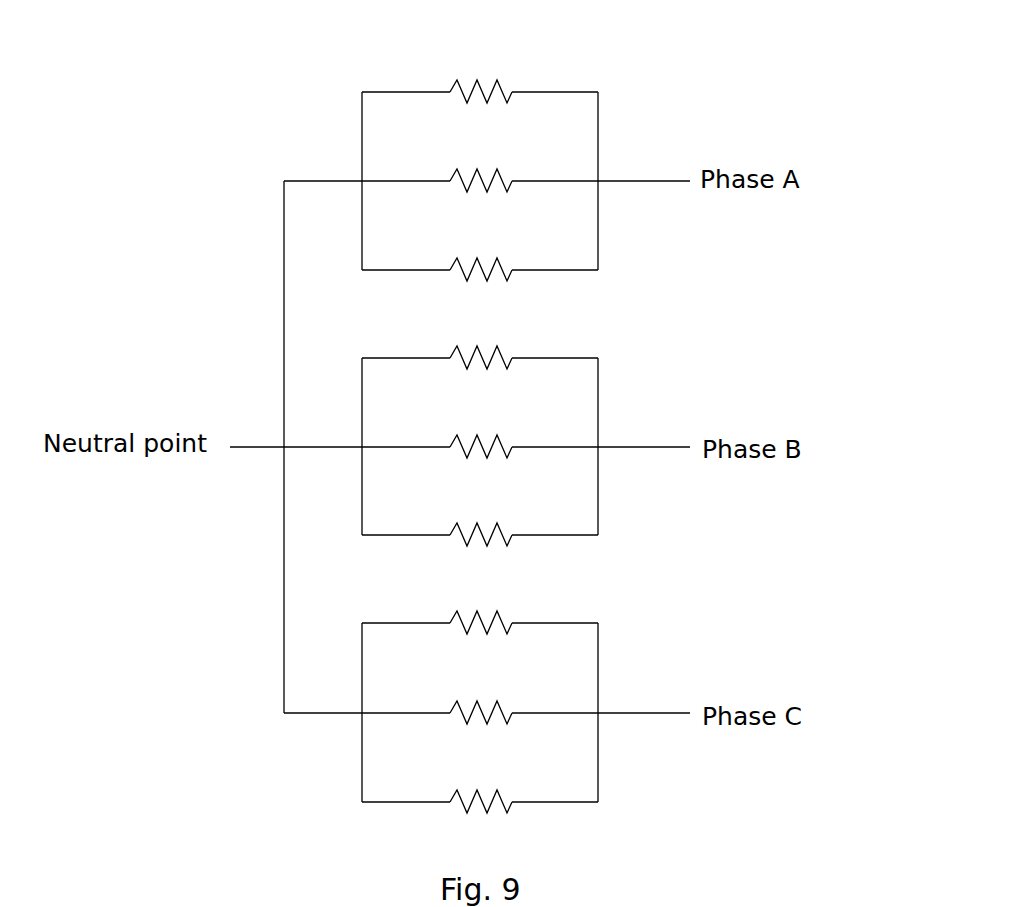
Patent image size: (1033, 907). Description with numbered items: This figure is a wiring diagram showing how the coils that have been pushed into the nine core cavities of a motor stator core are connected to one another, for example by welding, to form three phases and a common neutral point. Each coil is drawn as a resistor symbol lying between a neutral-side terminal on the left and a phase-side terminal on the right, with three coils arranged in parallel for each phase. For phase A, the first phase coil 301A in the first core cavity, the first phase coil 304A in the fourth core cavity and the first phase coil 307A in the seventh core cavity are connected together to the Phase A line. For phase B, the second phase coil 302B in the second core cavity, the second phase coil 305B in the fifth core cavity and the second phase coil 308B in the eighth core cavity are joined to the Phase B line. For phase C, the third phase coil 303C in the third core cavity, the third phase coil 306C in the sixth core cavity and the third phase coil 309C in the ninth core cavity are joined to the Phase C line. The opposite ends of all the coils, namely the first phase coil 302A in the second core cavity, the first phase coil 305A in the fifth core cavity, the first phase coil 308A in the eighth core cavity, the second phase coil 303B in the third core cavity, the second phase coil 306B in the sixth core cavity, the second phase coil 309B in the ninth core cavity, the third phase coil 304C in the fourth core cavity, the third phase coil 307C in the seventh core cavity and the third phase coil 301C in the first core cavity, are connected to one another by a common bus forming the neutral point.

The first phase coil in the first core cavity 301A is at (555, 75).
The first phase coil in the second core cavity 302A is at (406, 75).
The first phase coil in the fourth core cavity 304A is at (555, 164).
The first phase coil in the fifth core cavity 305A is at (406, 164).
The first phase coil in the seventh core cavity 307A is at (555, 253).
The first phase coil in the eighth core cavity 308A is at (406, 253).
The second phase coil in the second core cavity 302B is at (555, 341).
The second phase coil in the third core cavity 303B is at (406, 341).
The second phase coil in the fifth core cavity 305B is at (555, 432).
The second phase coil in the sixth core cavity 306B is at (406, 430).
The second phase coil in the eighth core cavity 308B is at (555, 523).
The second phase coil in the ninth core cavity 309B is at (406, 518).
The third phase coil in the third core cavity 303C is at (555, 608).
The third phase coil in the fourth core cavity 304C is at (406, 609).
The third phase coil in the sixth core cavity 306C is at (555, 696).
The third phase coil in the seventh core cavity 307C is at (406, 701).
The third phase coil in the ninth core cavity 309C is at (555, 786).
The third phase coil in the first core cavity 301C is at (406, 788).